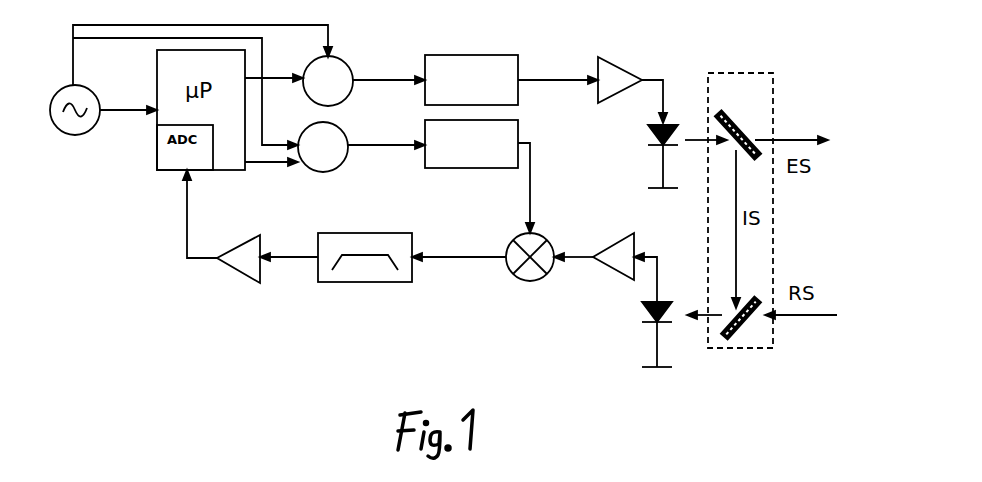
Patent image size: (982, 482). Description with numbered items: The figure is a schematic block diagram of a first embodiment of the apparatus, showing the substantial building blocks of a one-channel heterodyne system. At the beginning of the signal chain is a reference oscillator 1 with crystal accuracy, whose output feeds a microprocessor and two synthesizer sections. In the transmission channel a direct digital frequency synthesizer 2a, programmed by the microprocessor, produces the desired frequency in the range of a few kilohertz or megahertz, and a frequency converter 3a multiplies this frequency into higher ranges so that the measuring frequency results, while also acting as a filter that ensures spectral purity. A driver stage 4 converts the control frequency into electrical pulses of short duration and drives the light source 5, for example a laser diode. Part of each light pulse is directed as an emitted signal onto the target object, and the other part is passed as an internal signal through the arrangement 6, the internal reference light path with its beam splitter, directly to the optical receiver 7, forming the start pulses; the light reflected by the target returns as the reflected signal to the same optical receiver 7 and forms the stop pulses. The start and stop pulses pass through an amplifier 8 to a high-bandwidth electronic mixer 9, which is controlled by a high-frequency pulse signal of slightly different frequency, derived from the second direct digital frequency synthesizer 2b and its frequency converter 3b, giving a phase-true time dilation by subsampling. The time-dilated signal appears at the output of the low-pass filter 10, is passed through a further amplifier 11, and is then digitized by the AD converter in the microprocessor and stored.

The reference oscillator 1 is at (95, 136).
The direct digital frequency synthesizer 2a is at (328, 81).
The direct digital frequency synthesizer 2b is at (323, 147).
The frequency converter 3a is at (471, 80).
The frequency converter 3b is at (471, 144).
The driver stage 4 is at (642, 67).
The light source 5 is at (626, 156).
The arrangement 6 is at (746, 192).
The optical receiver 7 is at (618, 334).
The amplifier 8 is at (582, 272).
The electronic mixer 9 is at (493, 272).
The low-pass filter 10 is at (358, 272).
The amplifier 11 is at (217, 273).